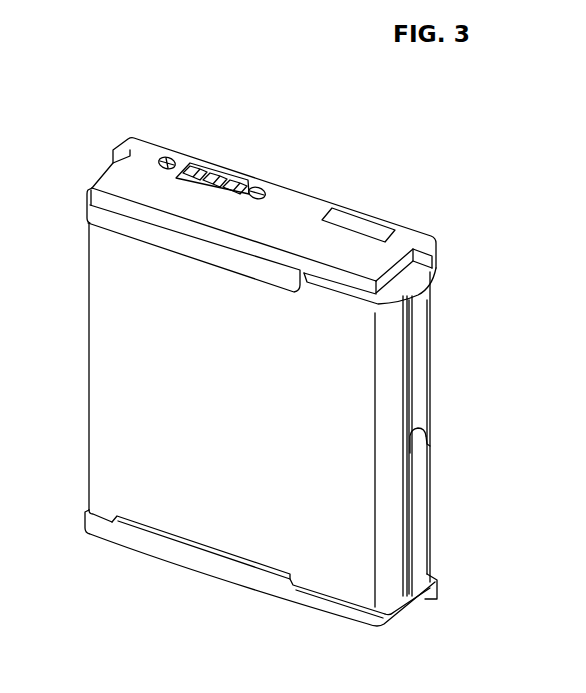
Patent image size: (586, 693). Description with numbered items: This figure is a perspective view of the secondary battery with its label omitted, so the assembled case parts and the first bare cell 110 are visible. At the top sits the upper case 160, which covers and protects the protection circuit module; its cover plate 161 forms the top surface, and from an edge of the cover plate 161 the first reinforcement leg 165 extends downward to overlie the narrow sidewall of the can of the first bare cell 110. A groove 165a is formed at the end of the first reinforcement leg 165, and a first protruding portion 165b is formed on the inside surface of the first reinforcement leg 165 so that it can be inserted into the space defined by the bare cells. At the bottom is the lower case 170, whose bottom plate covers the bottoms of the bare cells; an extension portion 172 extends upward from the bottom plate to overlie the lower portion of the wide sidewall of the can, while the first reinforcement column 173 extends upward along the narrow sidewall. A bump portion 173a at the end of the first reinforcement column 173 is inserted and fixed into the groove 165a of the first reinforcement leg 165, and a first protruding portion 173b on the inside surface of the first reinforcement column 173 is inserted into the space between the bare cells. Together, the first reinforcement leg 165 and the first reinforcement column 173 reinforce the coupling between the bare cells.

The first bare cell 110 is at (94, 336).
The upper case 160 is at (267, 214).
The cover plate 161 is at (290, 199).
The first reinforcement leg 165 is at (418, 355).
The groove 165a is at (426, 434).
The first protruding portion 165b is at (406, 380).
The lower case 170 is at (260, 589).
The extension portion 172 is at (177, 558).
The first reinforcement column 173 is at (420, 514).
The bump portion 173a is at (429, 444).
The first protruding portion 173b is at (407, 538).